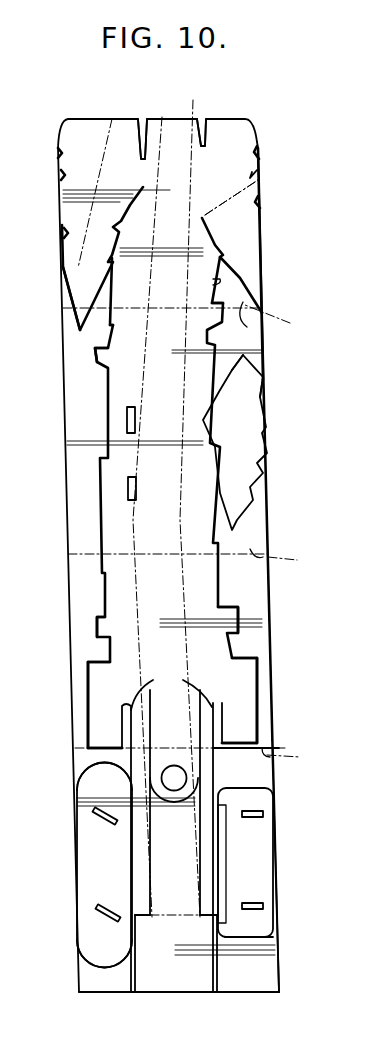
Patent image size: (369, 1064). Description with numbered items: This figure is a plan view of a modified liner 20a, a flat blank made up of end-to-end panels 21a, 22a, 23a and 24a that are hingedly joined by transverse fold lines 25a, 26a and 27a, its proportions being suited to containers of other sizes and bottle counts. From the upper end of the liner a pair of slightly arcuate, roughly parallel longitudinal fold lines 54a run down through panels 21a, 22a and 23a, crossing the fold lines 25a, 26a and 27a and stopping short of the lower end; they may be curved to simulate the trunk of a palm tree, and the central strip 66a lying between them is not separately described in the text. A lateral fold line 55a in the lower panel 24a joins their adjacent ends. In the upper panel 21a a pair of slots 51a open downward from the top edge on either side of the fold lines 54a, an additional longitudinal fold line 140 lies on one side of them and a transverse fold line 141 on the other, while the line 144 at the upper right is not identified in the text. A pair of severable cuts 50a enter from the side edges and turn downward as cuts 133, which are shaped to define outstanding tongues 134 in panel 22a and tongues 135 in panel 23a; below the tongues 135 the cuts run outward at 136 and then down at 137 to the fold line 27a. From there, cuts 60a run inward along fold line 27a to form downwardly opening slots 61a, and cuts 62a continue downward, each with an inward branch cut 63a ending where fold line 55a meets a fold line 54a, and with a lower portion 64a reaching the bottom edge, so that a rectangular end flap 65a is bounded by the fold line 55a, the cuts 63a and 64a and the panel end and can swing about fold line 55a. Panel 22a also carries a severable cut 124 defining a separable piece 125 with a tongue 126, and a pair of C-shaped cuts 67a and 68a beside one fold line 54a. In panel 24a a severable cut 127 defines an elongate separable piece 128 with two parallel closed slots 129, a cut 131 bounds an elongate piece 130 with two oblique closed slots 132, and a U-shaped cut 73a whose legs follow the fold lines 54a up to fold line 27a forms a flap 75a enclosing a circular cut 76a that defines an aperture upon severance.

The liner 20a is at (277, 630).
The upper liner panel 21a is at (255, 250).
The liner panel 22a is at (260, 518).
The liner panel 23a is at (268, 703).
The lower liner panel 24a is at (272, 968).
The transverse fold line 25a is at (189, 508).
The transverse fold line 26a is at (196, 558).
The transverse fold line 27a is at (200, 756).
The severable cuts 50a is at (62, 297).
The slots 51a is at (141, 130).
The longitudinal fold lines 54a is at (165, 135).
The lateral fold line 55a is at (176, 922).
The cuts 60a is at (91, 744).
The downwardly opening slots 61a is at (171, 691).
The cuts 62a is at (262, 787).
The branch cuts 63a is at (204, 913).
The cuts 64a is at (132, 990).
The end flap 65a is at (168, 984).
The central body 66a is at (165, 381).
The C-shaped cut 67a is at (127, 420).
The C-shaped cut 68a is at (128, 488).
The U-shaped cut 73a is at (200, 765).
The flap 75a is at (131, 783).
The circular cut 76a is at (175, 790).
The severable cut 124 is at (262, 370).
The separable piece 125 is at (228, 437).
The tab or tongue 126 is at (172, 353).
The severable cut 127 is at (275, 942).
The separable piece 128 is at (239, 869).
The closed slots 129 is at (265, 814).
The elongate piece 130 is at (89, 875).
The severable cut 131 is at (85, 959).
The closed slots 132 is at (95, 812).
The cuts 133 is at (110, 325).
The tabs or tongues 134 is at (97, 363).
The tabs or tongues 135 is at (98, 628).
The cuts 136 is at (89, 656).
The cuts 137 is at (87, 727).
The longitudinal fold line 140 is at (82, 235).
The transverse fold line 141 is at (253, 171).
The axis line 144 is at (287, 197).